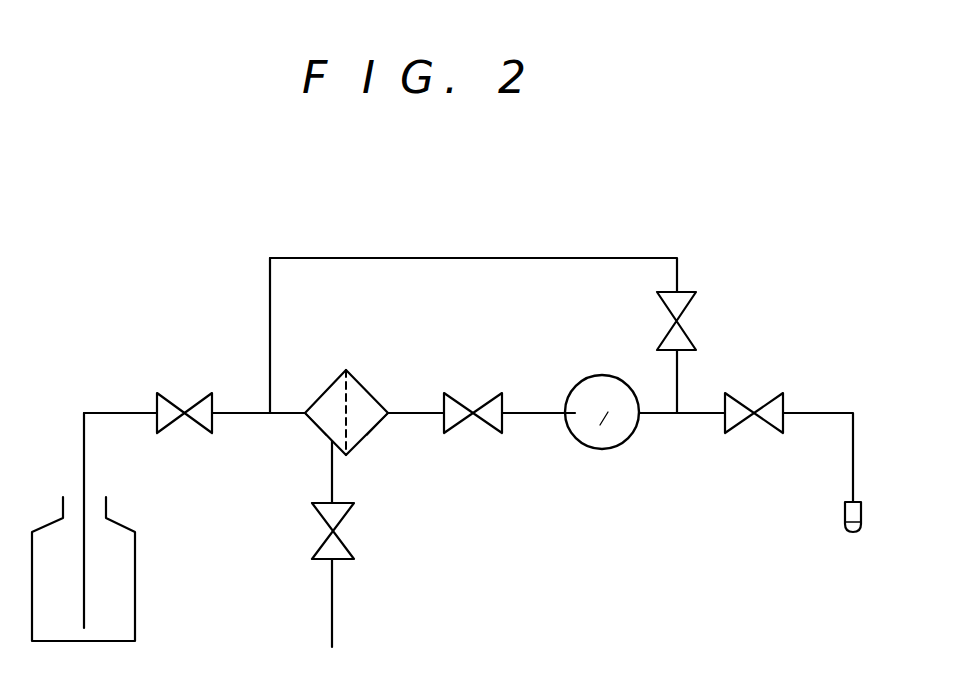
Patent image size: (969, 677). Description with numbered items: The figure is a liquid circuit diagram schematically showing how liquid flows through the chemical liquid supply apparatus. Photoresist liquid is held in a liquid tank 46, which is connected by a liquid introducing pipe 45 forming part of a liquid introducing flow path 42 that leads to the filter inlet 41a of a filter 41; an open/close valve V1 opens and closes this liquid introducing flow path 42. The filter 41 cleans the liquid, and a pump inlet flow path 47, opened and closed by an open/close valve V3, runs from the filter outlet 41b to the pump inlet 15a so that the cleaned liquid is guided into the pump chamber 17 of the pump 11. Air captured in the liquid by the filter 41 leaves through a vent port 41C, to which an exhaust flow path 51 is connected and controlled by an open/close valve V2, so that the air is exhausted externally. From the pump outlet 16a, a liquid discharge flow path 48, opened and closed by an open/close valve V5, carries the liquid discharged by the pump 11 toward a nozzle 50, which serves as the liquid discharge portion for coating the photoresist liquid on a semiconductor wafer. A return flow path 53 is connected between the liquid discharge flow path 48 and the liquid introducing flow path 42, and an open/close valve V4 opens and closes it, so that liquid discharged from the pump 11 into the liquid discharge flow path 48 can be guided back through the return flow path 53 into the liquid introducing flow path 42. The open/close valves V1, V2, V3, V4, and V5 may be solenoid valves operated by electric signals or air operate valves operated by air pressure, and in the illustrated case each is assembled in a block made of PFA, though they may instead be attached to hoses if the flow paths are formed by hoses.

The pump 11 is at (605, 373).
The pump inlet 15a is at (565, 400).
The pump outlet 16a is at (645, 420).
The pump chamber 17 is at (605, 432).
The filter 41 is at (362, 388).
The filter inlet 41a is at (305, 415).
The filter outlet 41b is at (392, 417).
The vent port 41C is at (338, 447).
The liquid introducing flow path 42 is at (242, 413).
The liquid introducing pipe 45 is at (84, 478).
The liquid tank 46 is at (135, 605).
The pump inlet flow path 47 is at (530, 413).
The liquid discharge flow path 48 is at (826, 413).
The nozzle 50 is at (845, 510).
The exhaust flow path 51 is at (332, 607).
The return flow path 53 is at (513, 258).
The open/close valve V1 is at (170, 400).
The open/close valve V2 is at (335, 518).
The open/close valve V3 is at (458, 402).
The open/close valve V4 is at (683, 305).
The open/close valve V5 is at (733, 408).